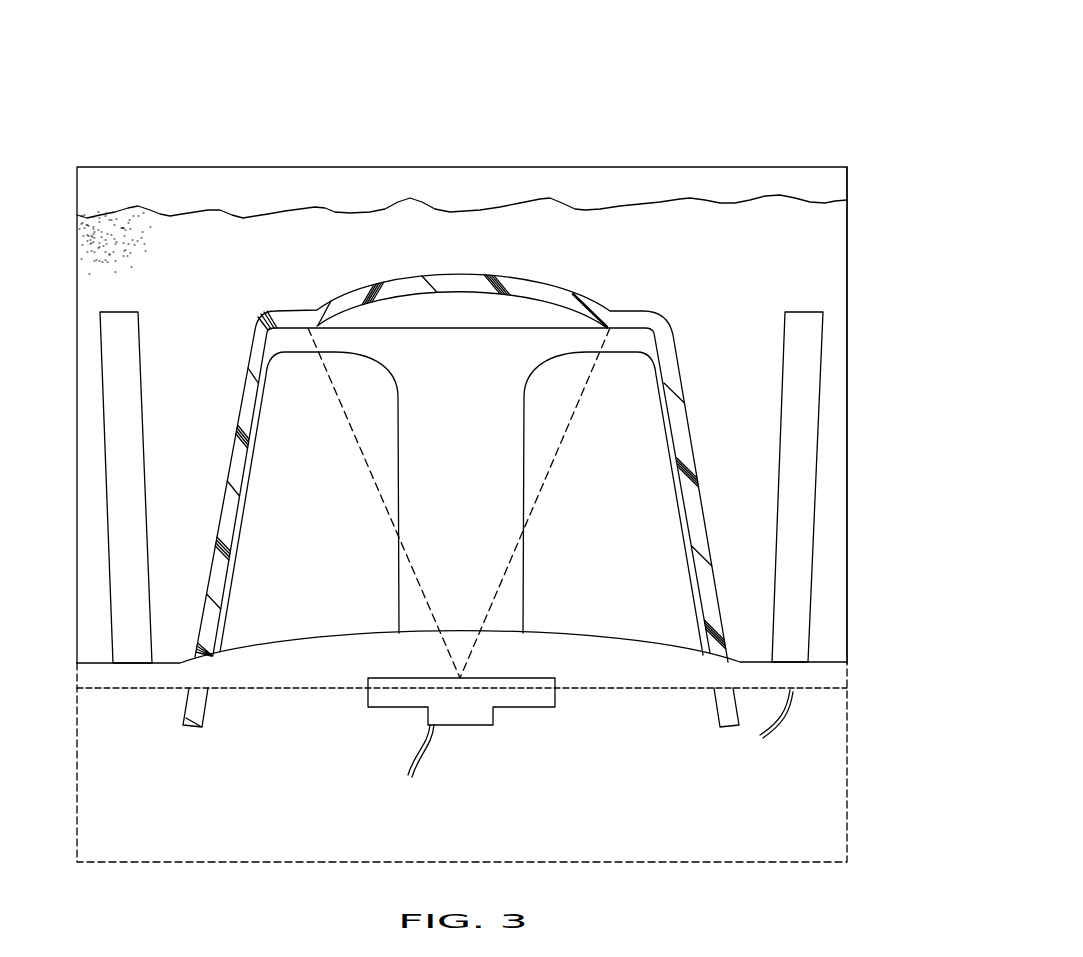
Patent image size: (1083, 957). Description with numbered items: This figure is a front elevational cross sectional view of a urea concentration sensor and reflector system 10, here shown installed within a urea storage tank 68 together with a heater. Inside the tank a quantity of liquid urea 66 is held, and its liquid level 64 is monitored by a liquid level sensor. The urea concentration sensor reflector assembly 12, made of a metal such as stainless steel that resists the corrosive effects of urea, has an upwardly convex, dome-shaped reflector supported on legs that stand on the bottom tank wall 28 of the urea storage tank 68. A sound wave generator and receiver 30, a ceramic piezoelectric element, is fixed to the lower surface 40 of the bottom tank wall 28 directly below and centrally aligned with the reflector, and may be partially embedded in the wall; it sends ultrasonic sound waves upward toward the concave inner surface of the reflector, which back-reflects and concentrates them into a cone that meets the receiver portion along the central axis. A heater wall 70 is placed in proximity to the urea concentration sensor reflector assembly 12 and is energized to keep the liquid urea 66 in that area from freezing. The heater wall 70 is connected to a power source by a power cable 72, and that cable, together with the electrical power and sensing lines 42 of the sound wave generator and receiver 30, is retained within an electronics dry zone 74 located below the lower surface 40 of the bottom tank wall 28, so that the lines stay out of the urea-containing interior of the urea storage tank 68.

The urea concentration sensor and reflector system 10 is at (848, 95).
The urea concentration sensor reflector assembly 12 is at (698, 318).
The bottom tank wall 28 is at (830, 677).
The sound wave generator and receiver 30 is at (483, 715).
The lower surface 40 is at (257, 690).
The electrical power and sensing lines 42 is at (400, 762).
The liquid level 64 is at (208, 210).
The liquid urea 66 is at (100, 238).
The urea storage tank 68 is at (847, 230).
The heater wall 70 is at (812, 365).
The power cable 72 is at (757, 738).
The electronics dry zone 74 is at (847, 808).